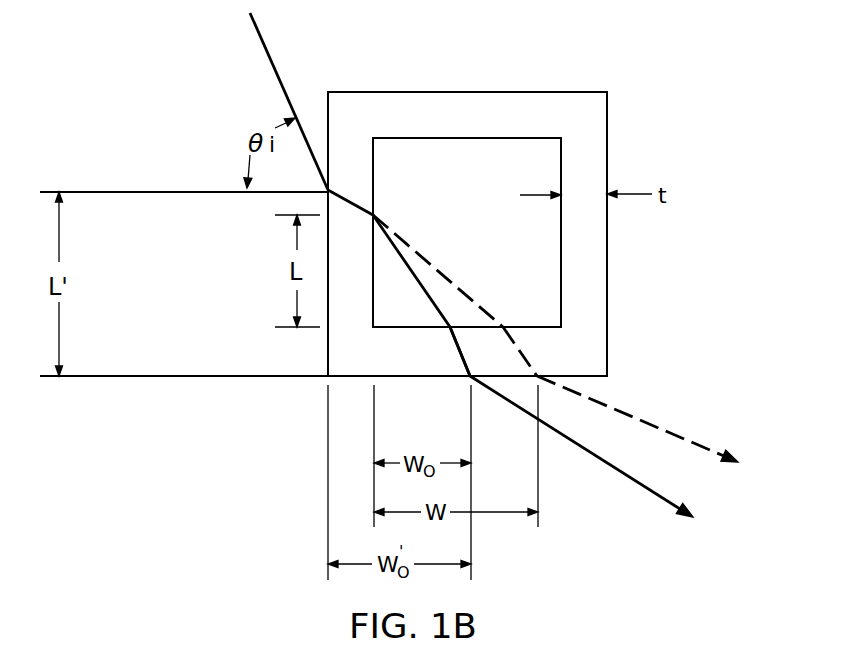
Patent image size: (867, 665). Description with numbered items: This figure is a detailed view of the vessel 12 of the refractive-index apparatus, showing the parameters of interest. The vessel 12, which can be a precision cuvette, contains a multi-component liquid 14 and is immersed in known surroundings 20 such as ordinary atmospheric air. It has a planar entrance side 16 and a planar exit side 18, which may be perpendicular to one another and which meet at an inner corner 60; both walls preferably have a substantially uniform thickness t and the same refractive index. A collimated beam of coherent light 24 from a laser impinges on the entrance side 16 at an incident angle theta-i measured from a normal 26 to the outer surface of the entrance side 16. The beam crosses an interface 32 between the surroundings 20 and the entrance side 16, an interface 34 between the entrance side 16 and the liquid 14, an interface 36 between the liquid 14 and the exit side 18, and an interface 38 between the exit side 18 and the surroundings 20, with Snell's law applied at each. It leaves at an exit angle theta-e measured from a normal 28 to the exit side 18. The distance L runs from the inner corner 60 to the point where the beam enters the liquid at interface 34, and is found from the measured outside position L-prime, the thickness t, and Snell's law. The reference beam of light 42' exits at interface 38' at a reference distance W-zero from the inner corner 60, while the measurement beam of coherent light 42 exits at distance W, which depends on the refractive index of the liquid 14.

The vessel 12 is at (607, 130).
The multi-component liquid 14 is at (470, 205).
The planar entrance side 16 is at (332, 195).
The planar exit side 18 is at (533, 363).
The surroundings 20 is at (192, 307).
The collimated beam of coherent light 24 is at (267, 52).
The normal 26 is at (142, 193).
The normal 28 is at (538, 495).
The interface 32 is at (328, 190).
The interface 34 is at (373, 213).
The interface 36 is at (504, 327).
The interface 38 is at (605, 328).
The interface 38' is at (433, 382).
The beam of coherent light 42 is at (649, 419).
The beam of light 42' is at (627, 446).
The inner corner 60 is at (326, 392).